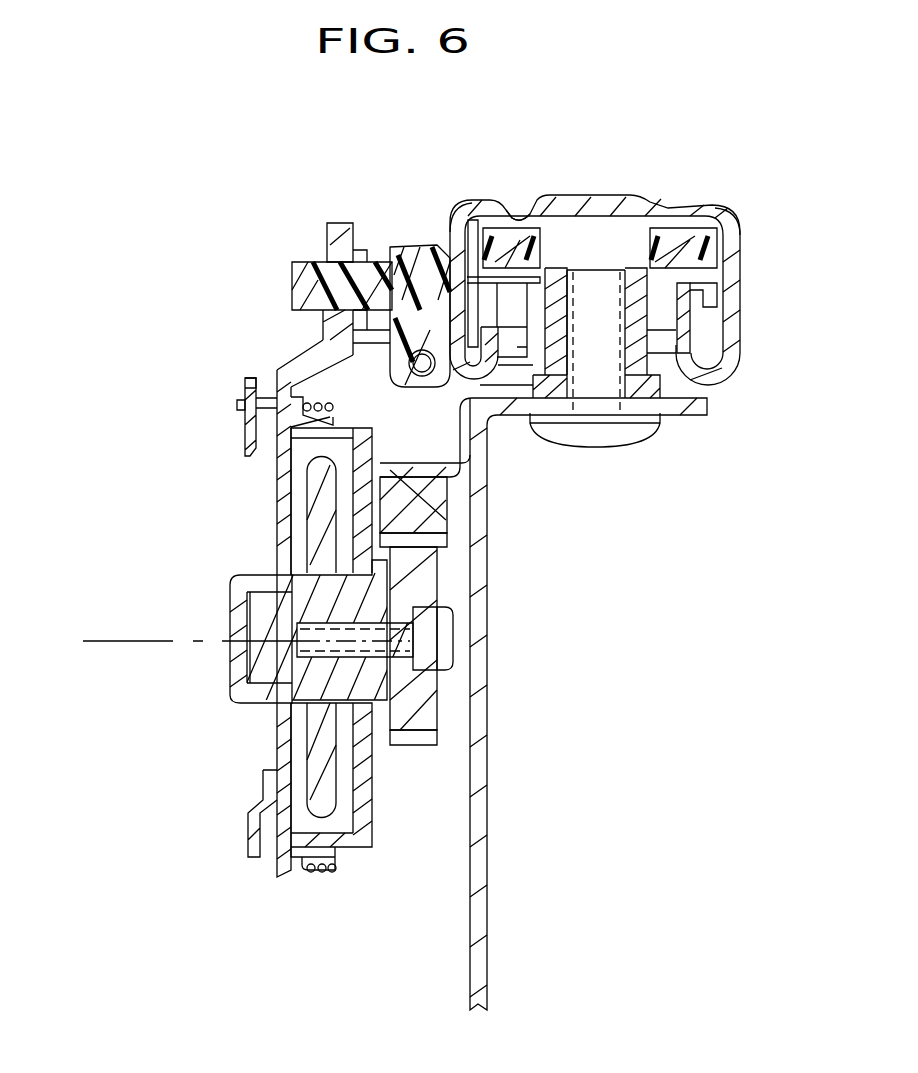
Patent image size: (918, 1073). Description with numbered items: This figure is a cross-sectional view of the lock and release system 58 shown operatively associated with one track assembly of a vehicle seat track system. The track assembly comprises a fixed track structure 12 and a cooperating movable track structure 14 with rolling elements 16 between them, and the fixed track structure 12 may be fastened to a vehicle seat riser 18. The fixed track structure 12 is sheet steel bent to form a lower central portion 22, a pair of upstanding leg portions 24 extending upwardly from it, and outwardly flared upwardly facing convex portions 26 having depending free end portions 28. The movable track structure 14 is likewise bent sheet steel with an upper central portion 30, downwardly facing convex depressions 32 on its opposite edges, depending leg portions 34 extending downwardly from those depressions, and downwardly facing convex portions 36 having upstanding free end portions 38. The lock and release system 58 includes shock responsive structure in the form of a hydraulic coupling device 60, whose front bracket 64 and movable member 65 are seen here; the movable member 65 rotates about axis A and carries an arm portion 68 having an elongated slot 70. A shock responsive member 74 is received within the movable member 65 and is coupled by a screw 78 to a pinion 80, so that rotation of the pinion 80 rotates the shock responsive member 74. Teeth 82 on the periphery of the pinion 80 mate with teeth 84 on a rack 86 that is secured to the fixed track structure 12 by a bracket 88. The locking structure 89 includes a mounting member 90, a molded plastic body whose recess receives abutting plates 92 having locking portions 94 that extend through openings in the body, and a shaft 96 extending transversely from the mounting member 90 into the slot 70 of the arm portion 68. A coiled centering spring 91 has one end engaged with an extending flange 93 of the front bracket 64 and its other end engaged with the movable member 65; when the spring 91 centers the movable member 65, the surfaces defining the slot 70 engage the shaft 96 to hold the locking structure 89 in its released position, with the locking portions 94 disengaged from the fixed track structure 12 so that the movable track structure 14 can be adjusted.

The fixed track structure 12 is at (740, 333).
The movable track structure 14 is at (632, 190).
The rolling elements 16 is at (684, 247).
The vehicle seat riser 18 is at (490, 750).
The lower central portion 22 is at (658, 375).
The upstanding leg portions 24 is at (665, 340).
The outwardly flared upwardly facing convex portions 26 is at (697, 280).
The depending free end portions 28 is at (715, 298).
The upper central portion 30 is at (565, 197).
The downwardly facing convex depressions 32 is at (507, 213).
The depending leg portions 34 is at (447, 230).
The downwardly facing convex portions 36 is at (455, 400).
The upstanding free end portions 38 is at (650, 273).
The lock and release system 58 is at (167, 683).
The hydraulic coupling device 60 is at (278, 533).
The front bracket 64 is at (245, 418).
The movable member 65 is at (277, 372).
The arm portion 68 is at (323, 223).
The elongated slot 70 is at (333, 300).
The shock responsive member 74 is at (310, 710).
The screw 78 is at (453, 643).
The pinion 80 is at (423, 710).
The teeth 82 is at (420, 743).
The teeth 84 is at (445, 540).
The rack 86 is at (438, 503).
The bracket 88 is at (473, 460).
The locking structure 89 is at (400, 247).
The mounting member 90 is at (323, 260).
The centering spring 91 is at (325, 415).
The abutting plates 92 is at (365, 337).
The extending flange 93 is at (245, 388).
The locking portions 94 is at (490, 307).
The shaft 96 is at (293, 280).
The axis A is at (117, 640).